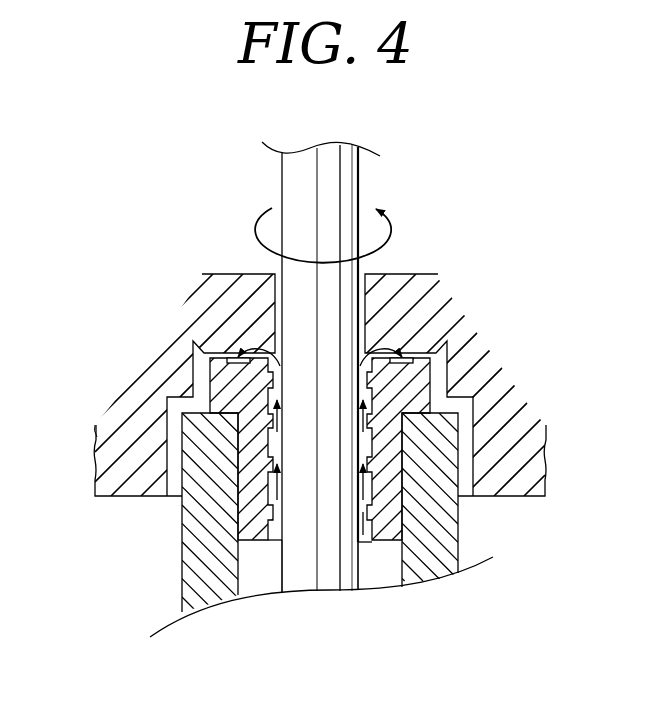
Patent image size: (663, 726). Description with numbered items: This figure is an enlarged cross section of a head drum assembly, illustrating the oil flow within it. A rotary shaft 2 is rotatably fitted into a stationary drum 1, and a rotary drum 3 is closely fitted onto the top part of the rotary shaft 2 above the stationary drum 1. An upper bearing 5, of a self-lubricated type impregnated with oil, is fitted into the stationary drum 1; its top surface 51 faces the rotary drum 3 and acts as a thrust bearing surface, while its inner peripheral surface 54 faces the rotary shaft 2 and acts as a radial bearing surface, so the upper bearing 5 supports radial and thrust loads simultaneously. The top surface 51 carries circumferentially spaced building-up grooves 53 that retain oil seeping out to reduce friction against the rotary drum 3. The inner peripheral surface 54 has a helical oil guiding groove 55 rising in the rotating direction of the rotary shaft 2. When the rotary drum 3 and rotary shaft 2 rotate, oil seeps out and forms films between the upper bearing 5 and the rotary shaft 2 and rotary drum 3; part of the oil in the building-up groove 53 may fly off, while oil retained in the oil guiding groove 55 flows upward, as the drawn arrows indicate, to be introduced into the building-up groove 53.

The stationary drum 1 is at (195, 548).
The rotary shaft 2 is at (298, 192).
The rotary drum 3 is at (118, 470).
The upper bearing 5 is at (222, 390).
The top surface 51 is at (385, 343).
The building-up groove 53 is at (367, 352).
The inner peripheral surface 54 is at (357, 528).
The oil guiding groove 55 is at (367, 514).